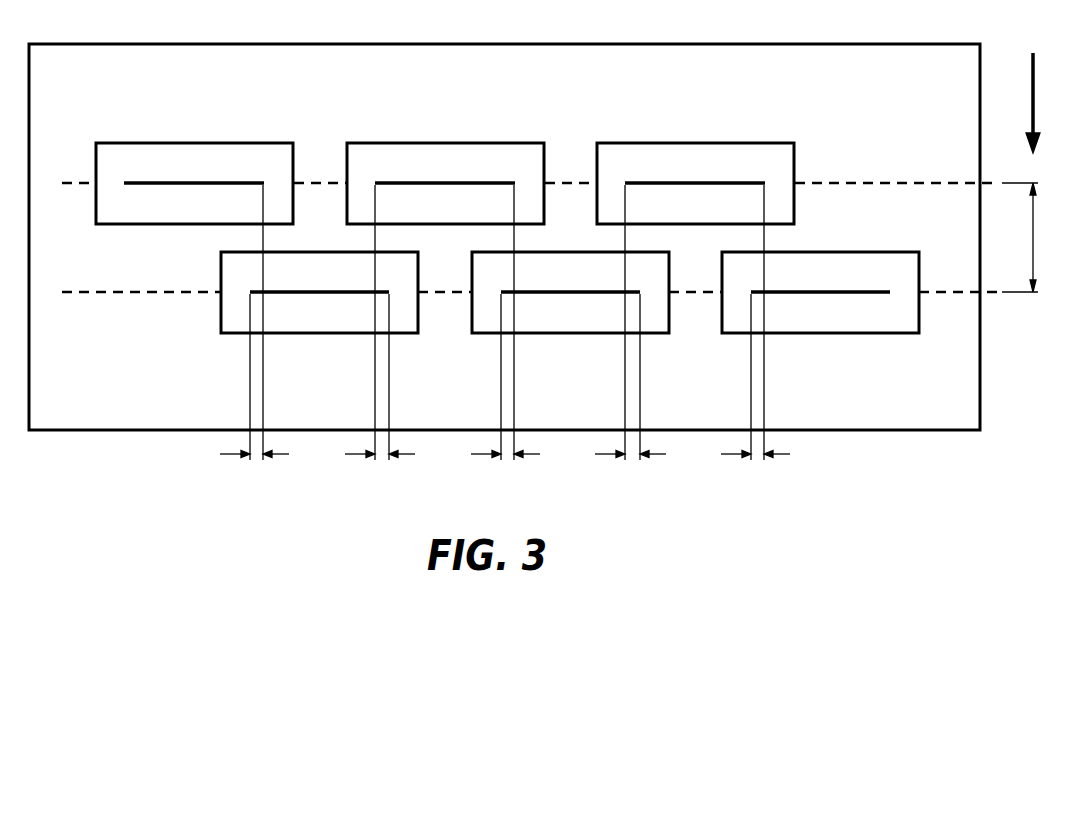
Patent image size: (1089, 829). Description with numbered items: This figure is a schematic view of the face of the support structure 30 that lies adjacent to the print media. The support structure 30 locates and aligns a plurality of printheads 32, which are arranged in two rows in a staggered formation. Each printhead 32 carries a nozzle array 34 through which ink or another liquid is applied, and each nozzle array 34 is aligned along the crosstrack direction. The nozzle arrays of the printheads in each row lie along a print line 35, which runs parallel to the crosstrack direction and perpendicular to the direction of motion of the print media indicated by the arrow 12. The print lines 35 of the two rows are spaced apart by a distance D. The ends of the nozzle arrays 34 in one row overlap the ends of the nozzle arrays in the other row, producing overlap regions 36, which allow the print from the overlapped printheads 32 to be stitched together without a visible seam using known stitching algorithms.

The support structure 30 is at (490, 44).
The printhead 32 is at (125, 142).
The nozzle array 34 is at (188, 181).
The print line 35 is at (325, 181).
The overlap region 36 is at (220, 454).
The arrow 12 is at (1036, 95).
The distance D is at (1037, 237).